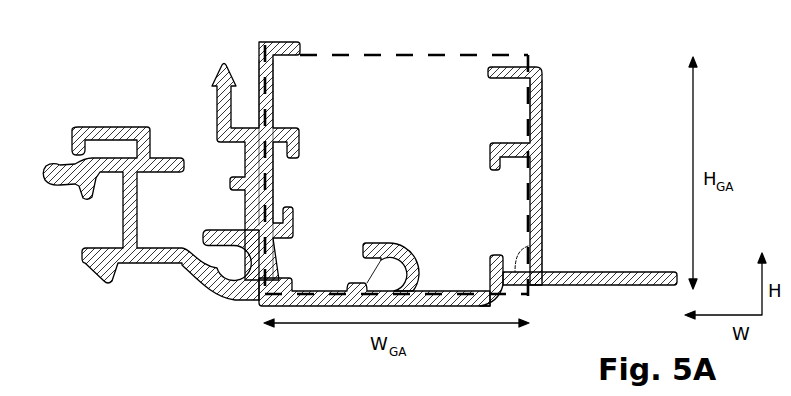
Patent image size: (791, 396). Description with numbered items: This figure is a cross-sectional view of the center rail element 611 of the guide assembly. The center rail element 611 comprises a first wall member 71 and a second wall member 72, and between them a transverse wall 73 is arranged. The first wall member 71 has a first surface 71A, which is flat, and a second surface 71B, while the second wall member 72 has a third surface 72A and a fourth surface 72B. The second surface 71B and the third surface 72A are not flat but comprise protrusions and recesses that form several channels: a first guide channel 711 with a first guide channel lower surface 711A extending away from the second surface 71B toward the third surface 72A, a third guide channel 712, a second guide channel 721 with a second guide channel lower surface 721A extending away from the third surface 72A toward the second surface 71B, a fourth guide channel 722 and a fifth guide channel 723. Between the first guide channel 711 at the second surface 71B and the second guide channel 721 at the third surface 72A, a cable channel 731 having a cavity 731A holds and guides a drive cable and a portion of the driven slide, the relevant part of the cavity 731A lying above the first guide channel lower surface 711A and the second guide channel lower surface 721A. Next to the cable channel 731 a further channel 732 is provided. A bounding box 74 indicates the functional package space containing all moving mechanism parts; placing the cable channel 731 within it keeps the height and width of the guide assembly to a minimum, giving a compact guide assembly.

The second wall member 72 is at (279, 151).
The third surface 72A is at (298, 93).
The fourth surface 72B is at (233, 155).
The bounding box 74 is at (451, 57).
The third guide channel 712 is at (507, 95).
The first wall member 71 is at (535, 153).
The first surface 71A is at (557, 153).
The second surface 71B is at (464, 167).
The fifth guide channel 723 is at (285, 115).
The fourth guide channel 722 is at (277, 190).
The second guide channel 721 is at (278, 270).
The second guide channel lower surface 721A is at (248, 230).
The cable channel 731 is at (387, 282).
The first guide channel 711 is at (517, 216).
The first guide channel lower surface 711A is at (528, 244).
The center rail element 611 is at (573, 272).
The transverse wall 73 is at (392, 284).
The cavity 731A is at (343, 281).
The further channel 732 is at (505, 305).